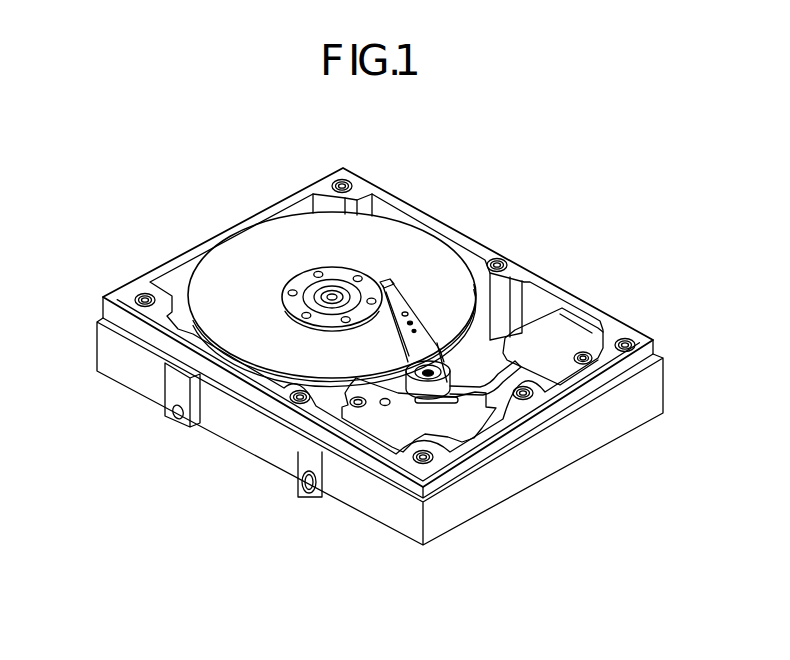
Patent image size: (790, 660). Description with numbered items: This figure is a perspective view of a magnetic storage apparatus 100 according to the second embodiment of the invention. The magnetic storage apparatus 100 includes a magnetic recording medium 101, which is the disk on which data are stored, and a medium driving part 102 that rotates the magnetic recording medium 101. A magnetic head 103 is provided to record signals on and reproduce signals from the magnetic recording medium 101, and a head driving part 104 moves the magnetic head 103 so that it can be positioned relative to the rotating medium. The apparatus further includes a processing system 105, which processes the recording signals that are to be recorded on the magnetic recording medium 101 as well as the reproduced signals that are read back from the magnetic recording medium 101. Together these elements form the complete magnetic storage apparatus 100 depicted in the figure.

The magnetic storage apparatus 100 is at (97, 176).
The magnetic recording medium 101 is at (377, 248).
The medium driving part 102 is at (292, 287).
The magnetic head 103 is at (386, 285).
The head driving part 104 is at (452, 412).
The processing system 105 is at (568, 340).